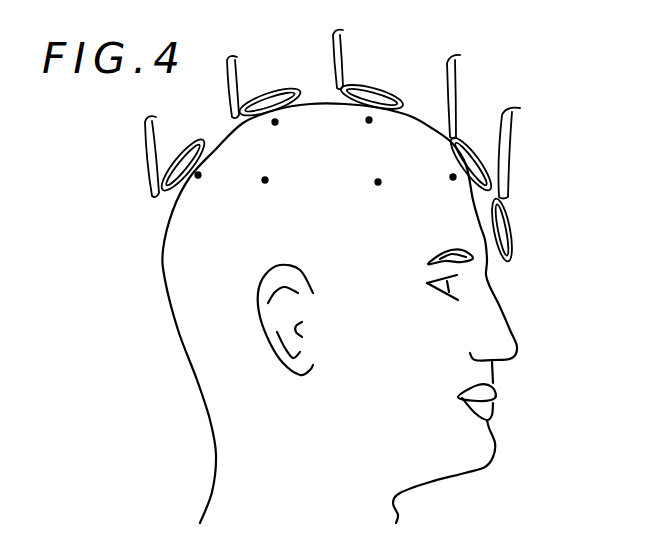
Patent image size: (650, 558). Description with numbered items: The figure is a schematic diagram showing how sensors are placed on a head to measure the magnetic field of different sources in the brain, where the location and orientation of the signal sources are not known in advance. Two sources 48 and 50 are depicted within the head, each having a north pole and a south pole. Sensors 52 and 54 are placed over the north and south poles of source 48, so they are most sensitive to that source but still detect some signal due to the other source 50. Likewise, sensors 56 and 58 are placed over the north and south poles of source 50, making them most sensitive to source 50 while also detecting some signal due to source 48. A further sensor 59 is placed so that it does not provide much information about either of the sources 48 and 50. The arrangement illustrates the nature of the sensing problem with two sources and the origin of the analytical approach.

The source 48 is at (201, 176).
The source 50 is at (278, 123).
The sensor 52 is at (190, 138).
The sensor 54 is at (383, 92).
The sensor 56 is at (278, 90).
The sensor 58 is at (465, 140).
The sensor 59 is at (513, 258).